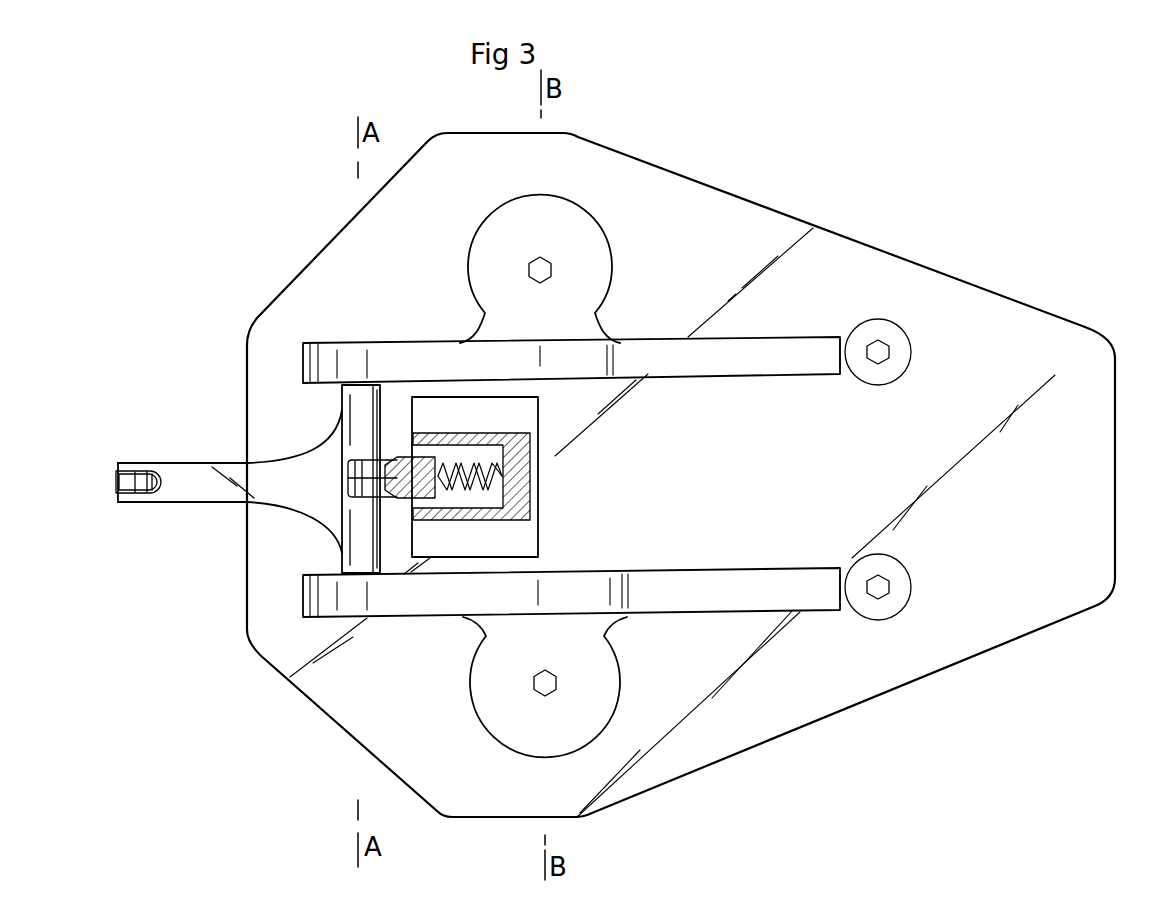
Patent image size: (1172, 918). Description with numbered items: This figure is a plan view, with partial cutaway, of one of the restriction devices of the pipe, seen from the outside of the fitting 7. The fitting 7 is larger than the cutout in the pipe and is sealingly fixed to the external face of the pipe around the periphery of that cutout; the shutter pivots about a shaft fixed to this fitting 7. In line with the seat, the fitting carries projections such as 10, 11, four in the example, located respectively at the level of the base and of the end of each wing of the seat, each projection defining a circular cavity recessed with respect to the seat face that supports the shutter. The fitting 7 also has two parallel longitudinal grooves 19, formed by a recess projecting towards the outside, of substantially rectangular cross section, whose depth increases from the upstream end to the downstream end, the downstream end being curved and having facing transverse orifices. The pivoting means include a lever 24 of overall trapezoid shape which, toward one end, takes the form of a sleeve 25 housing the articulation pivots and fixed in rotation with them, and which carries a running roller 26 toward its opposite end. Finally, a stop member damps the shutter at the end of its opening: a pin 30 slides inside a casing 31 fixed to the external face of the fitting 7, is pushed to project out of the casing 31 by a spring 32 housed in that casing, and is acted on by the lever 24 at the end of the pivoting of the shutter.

The fitting 7 is at (1080, 526).
The projection 10 is at (904, 348).
The projection 11 is at (588, 232).
The longitudinal groove 19 is at (770, 345).
The lever 24 is at (196, 469).
The sleeve 25 is at (353, 407).
The running roller 26 is at (125, 480).
The pin 30 is at (380, 468).
The casing 31 is at (527, 542).
The spring 32 is at (517, 473).